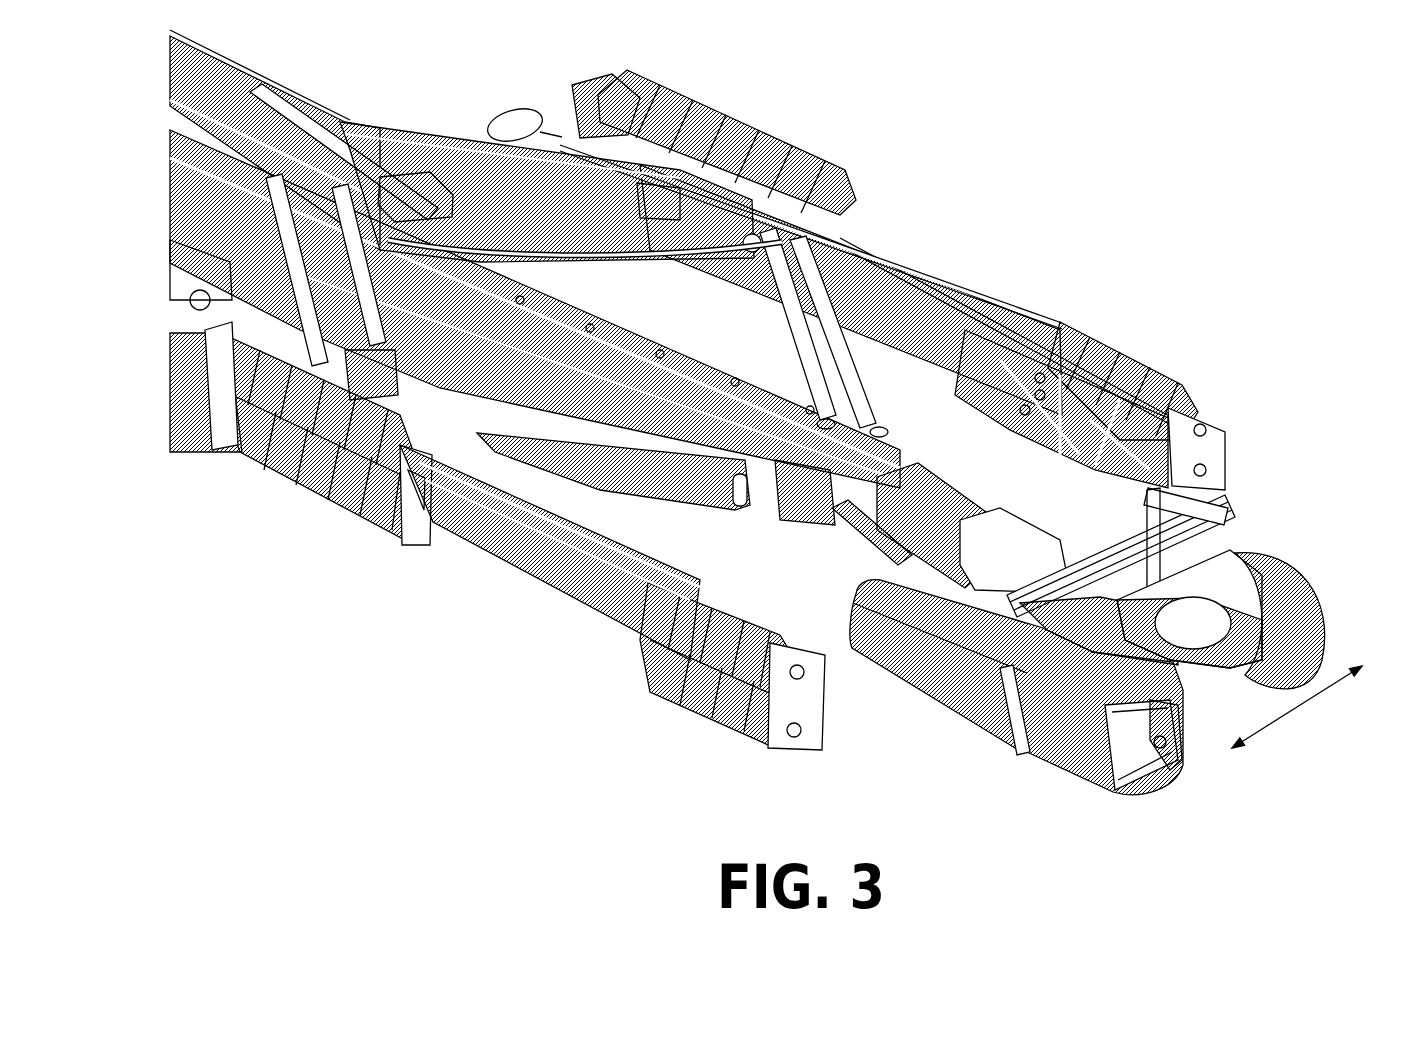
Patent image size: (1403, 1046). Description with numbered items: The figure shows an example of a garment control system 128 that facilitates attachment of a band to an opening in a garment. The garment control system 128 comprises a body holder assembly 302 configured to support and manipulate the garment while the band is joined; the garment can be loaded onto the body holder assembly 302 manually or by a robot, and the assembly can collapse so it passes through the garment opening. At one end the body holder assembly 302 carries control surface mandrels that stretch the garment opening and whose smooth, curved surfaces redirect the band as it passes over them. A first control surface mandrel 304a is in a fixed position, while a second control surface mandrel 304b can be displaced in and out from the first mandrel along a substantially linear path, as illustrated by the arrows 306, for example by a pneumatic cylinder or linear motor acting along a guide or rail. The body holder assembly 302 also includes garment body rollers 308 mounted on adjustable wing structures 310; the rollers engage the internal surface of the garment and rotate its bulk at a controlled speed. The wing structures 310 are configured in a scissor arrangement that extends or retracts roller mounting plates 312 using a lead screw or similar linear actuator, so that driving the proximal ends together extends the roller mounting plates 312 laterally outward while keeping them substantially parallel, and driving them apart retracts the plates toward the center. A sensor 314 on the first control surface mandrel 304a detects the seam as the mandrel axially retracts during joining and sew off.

The garment control system 128 is at (485, 742).
The body holder assembly 302 is at (800, 88).
The first control surface mandrel 304a is at (1113, 687).
The second control surface mandrel 304b is at (1250, 587).
The arrows 306 is at (1316, 698).
The garment body rollers 308 is at (795, 162).
The wing structures 310 is at (447, 118).
The roller mounting plates 312 is at (1060, 430).
The sensor 314 is at (1165, 742).